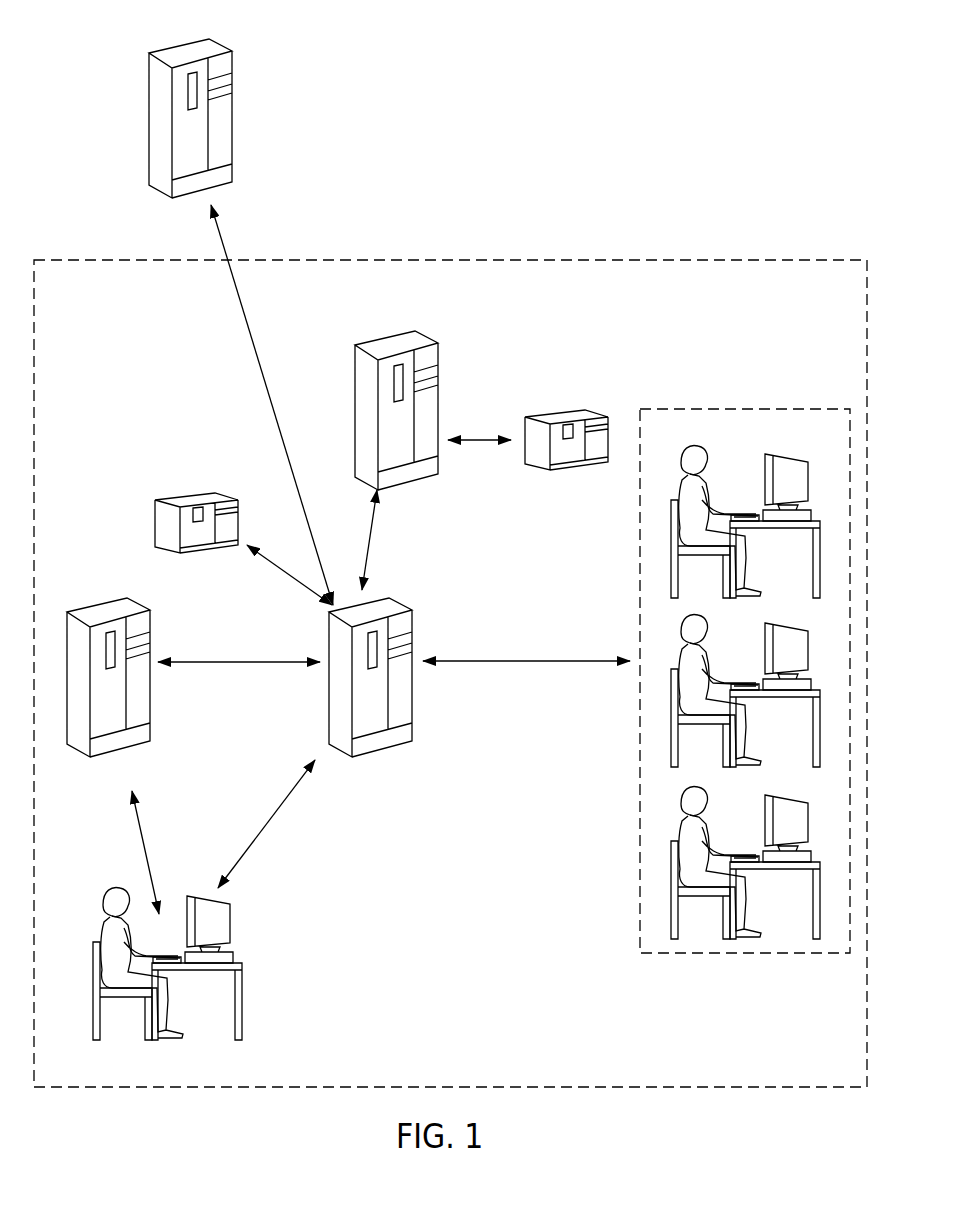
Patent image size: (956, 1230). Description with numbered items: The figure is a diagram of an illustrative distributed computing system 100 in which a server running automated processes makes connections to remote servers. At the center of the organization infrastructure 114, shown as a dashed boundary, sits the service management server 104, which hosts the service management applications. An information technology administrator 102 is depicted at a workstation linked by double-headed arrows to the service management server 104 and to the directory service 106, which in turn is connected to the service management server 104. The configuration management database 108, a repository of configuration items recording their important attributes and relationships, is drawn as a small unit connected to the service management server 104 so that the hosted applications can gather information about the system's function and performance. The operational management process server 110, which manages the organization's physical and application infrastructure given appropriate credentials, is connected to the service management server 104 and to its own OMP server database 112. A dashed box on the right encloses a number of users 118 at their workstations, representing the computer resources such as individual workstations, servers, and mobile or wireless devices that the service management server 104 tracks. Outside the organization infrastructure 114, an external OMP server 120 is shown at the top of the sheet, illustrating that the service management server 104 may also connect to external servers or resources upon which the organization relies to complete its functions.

The distributed computing system 100 is at (690, 118).
The information technology administrator 102 is at (242, 967).
The service management server 104 is at (410, 693).
The directory service 106 is at (107, 605).
The configuration management database 108 is at (157, 523).
The operational management process server 110 is at (358, 385).
The OMP server database 112 is at (538, 463).
The organization infrastructure 114 is at (640, 260).
The users 118 is at (683, 408).
The external OMP server 120 is at (150, 128).